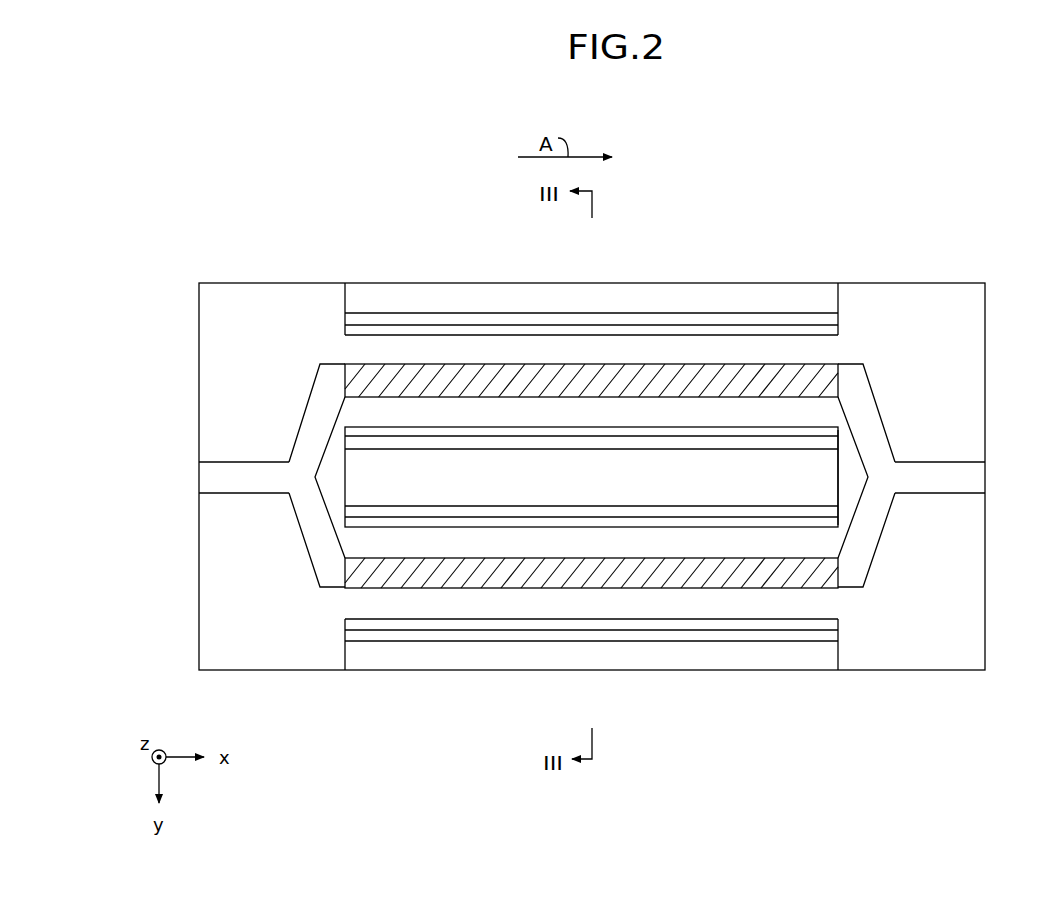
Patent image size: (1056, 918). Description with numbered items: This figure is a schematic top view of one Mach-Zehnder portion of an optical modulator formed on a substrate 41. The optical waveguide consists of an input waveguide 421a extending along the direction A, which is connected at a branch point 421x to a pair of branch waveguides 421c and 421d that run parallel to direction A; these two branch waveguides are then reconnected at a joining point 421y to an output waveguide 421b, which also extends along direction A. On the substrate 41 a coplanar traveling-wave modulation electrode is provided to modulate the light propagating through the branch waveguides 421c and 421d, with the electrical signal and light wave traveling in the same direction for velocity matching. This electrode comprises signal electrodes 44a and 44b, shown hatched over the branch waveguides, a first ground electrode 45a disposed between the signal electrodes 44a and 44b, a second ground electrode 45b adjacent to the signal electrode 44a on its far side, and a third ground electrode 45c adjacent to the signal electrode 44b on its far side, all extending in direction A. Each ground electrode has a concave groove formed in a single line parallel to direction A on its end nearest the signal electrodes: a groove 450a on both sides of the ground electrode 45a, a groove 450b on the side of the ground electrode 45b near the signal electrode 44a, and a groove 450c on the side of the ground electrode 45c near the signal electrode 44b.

The substrate 41 is at (958, 337).
The input waveguide 421a is at (238, 472).
The output waveguide 421b is at (937, 471).
The branch waveguide 421c is at (803, 370).
The branch waveguide 421d is at (808, 586).
The branch point 421x is at (298, 480).
The joining point 421y is at (885, 475).
The signal electrode 44a is at (378, 370).
The signal electrode 44b is at (373, 580).
The ground electrode 45a is at (848, 485).
The ground electrode 45b is at (850, 287).
The ground electrode 45c is at (850, 666).
The groove 450a is at (522, 515).
The groove 450b is at (598, 318).
The groove 450c is at (608, 633).